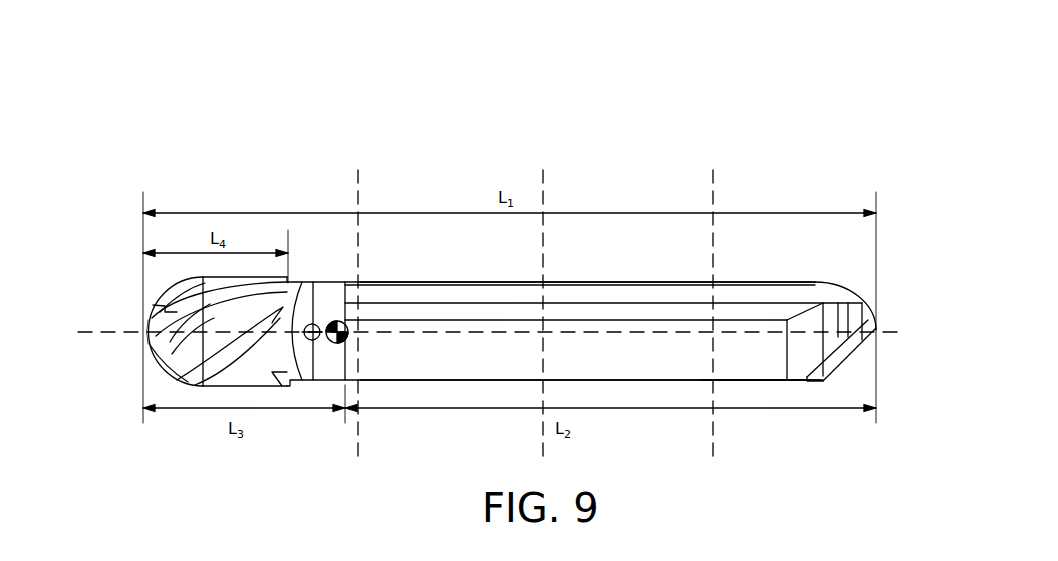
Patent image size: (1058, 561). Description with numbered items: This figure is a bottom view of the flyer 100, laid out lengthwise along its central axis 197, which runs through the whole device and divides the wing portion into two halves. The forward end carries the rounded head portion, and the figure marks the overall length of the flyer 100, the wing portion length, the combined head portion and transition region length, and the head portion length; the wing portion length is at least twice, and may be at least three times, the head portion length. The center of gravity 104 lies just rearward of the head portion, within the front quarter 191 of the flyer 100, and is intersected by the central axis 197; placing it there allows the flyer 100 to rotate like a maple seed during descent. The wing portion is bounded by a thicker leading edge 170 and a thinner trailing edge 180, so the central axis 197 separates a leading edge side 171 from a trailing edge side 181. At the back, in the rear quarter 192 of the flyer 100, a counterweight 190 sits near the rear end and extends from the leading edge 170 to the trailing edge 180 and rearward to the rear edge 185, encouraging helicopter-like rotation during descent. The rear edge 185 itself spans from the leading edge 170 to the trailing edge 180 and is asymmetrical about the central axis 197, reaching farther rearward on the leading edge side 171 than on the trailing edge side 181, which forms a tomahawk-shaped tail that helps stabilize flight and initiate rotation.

The flyer 100 is at (184, 82).
The center of gravity 104 is at (337, 321).
The leading edge 170 is at (623, 281).
The leading edge side 171 is at (892, 224).
The trailing edge 180 is at (752, 382).
The trailing edge side 181 is at (898, 442).
The rear edge 185 is at (858, 350).
The counterweight 190 is at (858, 320).
The front quarter 191 is at (226, 192).
The rear quarter 192 is at (798, 184).
The central axis 197 is at (115, 332).